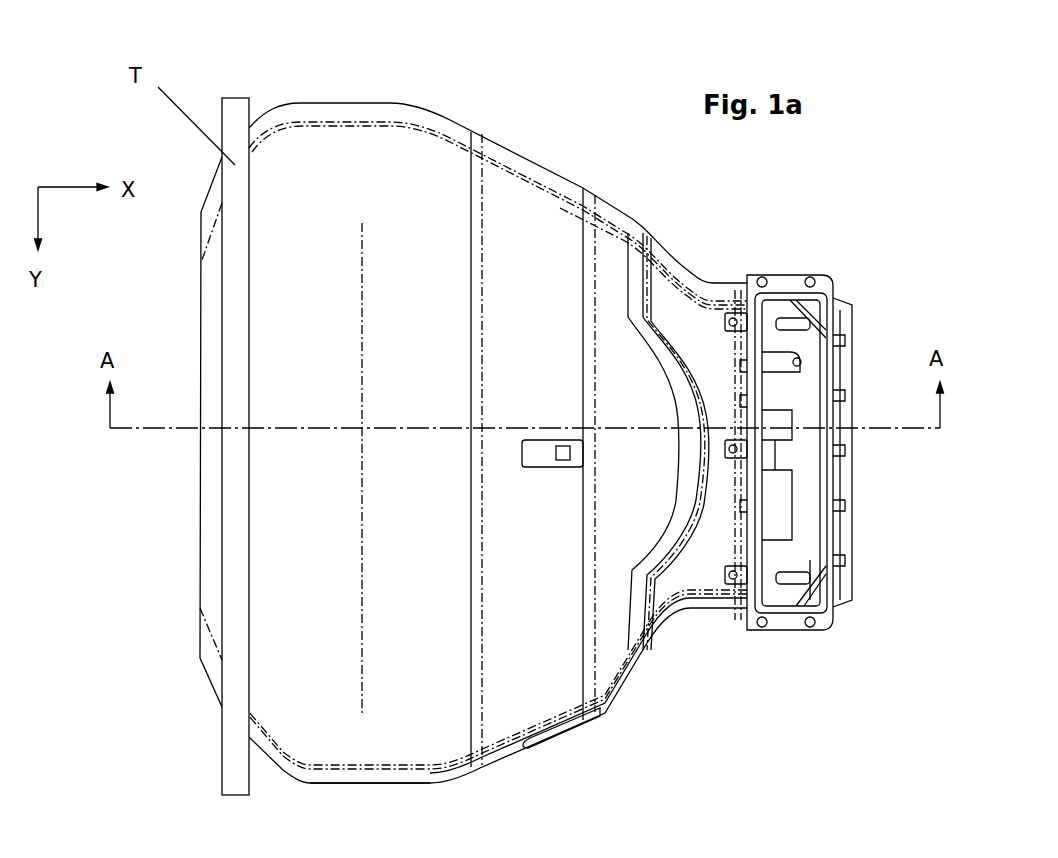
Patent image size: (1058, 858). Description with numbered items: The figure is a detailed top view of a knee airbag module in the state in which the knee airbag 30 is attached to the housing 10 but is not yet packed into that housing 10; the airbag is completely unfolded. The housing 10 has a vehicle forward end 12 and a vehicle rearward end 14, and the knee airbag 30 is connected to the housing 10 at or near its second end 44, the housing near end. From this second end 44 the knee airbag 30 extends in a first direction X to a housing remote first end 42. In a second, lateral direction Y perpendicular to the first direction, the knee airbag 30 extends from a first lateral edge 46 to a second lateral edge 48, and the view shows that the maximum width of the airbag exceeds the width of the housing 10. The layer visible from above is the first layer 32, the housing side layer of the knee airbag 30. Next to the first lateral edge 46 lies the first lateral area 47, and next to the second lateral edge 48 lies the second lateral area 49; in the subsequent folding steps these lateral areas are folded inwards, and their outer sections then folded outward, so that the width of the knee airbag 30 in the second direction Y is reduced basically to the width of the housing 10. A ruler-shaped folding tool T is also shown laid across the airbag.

The housing 10 is at (805, 358).
The vehicle forward end 12 is at (848, 536).
The vehicle rearward end 14 is at (748, 559).
The knee airbag 30 is at (447, 272).
The first layer 32 is at (432, 500).
The first end 42 is at (214, 466).
The second end 44 is at (843, 370).
The first lateral edge 46 is at (430, 107).
The first lateral area 47 is at (433, 152).
The second lateral edge 48 is at (432, 783).
The second lateral area 49 is at (443, 722).